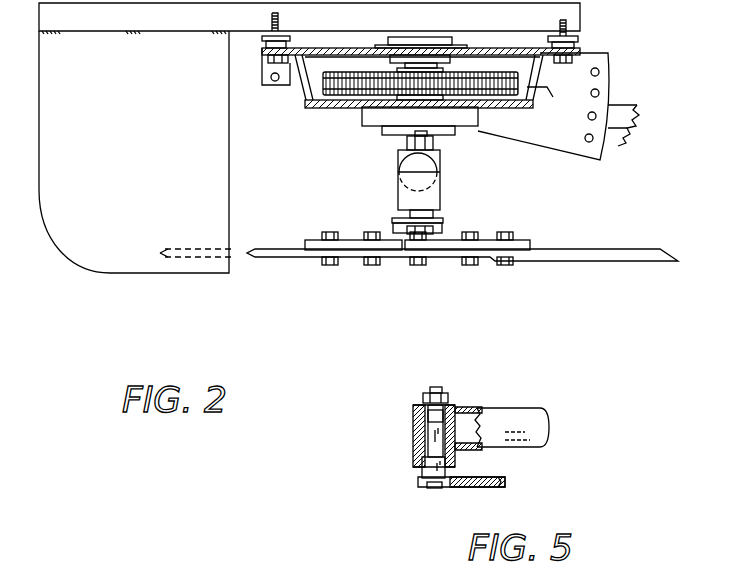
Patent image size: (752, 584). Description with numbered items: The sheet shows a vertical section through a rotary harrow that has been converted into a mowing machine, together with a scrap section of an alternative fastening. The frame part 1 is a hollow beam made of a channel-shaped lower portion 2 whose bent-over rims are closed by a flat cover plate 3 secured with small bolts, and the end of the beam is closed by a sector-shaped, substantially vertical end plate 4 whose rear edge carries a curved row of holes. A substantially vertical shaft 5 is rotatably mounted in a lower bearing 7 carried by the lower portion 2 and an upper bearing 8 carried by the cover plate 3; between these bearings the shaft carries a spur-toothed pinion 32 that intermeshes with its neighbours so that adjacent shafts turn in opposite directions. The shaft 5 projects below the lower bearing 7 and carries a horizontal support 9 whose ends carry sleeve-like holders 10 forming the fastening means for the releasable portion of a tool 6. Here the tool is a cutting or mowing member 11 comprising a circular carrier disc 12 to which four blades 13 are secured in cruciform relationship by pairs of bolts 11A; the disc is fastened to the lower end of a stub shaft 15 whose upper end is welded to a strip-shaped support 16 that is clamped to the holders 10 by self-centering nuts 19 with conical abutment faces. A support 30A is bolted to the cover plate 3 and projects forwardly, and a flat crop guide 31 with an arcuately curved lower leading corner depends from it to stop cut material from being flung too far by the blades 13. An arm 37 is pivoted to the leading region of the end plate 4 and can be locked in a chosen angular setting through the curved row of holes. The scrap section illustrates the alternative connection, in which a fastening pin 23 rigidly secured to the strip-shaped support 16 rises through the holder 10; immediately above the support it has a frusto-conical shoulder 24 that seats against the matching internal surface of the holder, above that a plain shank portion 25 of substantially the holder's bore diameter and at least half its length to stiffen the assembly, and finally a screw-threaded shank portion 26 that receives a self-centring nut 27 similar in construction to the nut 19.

In FIG. 2, the frame part 1 is at (302, 105).
In FIG. 2, the lower portion 2 is at (543, 104).
In FIG. 2, the cover plate 3 is at (490, 50).
In FIG. 2, the end plate 4 is at (571, 145).
In FIG. 2, the shaft 5 is at (419, 62).
In FIG. 2, the tool 6 is at (441, 200).
In FIG. 5, the tool 6 is at (525, 404).
In FIG. 2, the lower bearing 7 is at (400, 141).
In FIG. 2, the upper bearing 8 is at (412, 37).
In FIG. 2, the support 9 is at (398, 188).
In FIG. 5, the support 9 is at (547, 422).
In FIG. 2, the holder 10 is at (441, 196).
In FIG. 5, the holder 10 is at (413, 416).
In FIG. 2, the cutting or mowing member 11 is at (627, 252).
In FIG. 2, the bolts 11A is at (412, 281).
In FIG. 2, the carrier disc 12 is at (528, 243).
In FIG. 2, the blade 13 is at (256, 249).
In FIG. 2, the stub shaft 15 is at (397, 229).
In FIG. 2, the strip-shaped support 16 is at (445, 221).
In FIG. 5, the strip-shaped support 16 is at (505, 481).
In FIG. 2, the nut 19 is at (399, 153).
In FIG. 5, the fastening pin 23 is at (429, 489).
In FIG. 5, the shoulder 24 is at (422, 470).
In FIG. 5, the plain shank portion 25 is at (428, 436).
In FIG. 5, the screw-threaded shank portion 26 is at (434, 387).
In FIG. 5, the self-centring nut 27 is at (447, 396).
In FIG. 2, the support 30A is at (580, 24).
In FIG. 2, the crop guide 31 is at (229, 191).
In FIG. 2, the pinion 32 is at (352, 108).
In FIG. 2, the arm 37 is at (631, 137).